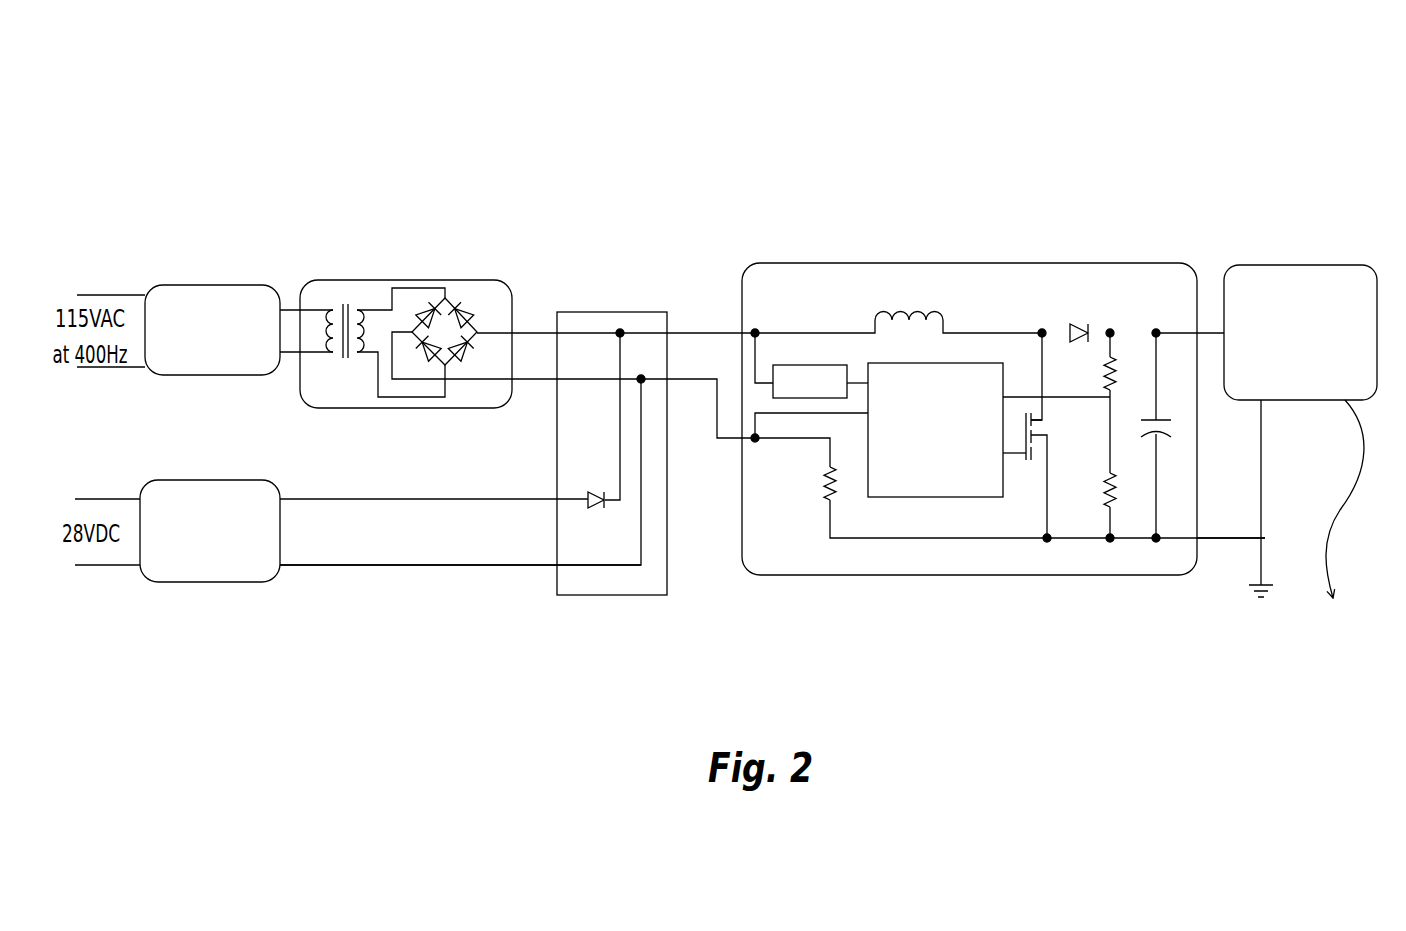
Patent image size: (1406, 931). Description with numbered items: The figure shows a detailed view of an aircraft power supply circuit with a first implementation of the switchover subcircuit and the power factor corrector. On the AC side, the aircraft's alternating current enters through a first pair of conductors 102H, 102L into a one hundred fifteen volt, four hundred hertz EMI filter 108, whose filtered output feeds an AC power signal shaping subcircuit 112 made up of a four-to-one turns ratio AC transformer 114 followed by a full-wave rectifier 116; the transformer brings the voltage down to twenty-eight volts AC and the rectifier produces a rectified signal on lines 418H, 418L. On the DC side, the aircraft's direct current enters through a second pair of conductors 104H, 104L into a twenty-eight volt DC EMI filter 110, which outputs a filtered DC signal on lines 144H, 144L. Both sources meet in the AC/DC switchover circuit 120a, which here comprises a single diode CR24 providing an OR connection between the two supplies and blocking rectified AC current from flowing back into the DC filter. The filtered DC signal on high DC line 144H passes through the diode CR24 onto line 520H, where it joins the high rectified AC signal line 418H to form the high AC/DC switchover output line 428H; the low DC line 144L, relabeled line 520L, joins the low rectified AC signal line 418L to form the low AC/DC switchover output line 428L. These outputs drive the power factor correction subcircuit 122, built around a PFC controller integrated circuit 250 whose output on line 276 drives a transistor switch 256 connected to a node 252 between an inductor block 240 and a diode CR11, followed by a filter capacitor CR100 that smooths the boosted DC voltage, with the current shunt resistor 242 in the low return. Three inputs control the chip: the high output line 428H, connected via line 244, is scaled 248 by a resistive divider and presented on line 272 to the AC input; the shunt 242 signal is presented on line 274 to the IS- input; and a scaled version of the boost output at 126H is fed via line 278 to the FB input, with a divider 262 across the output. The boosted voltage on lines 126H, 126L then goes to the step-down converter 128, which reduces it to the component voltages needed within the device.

The first conductor (high AC conductor) 102H is at (117, 295).
The first conductor (low AC conductor) 102L is at (128, 368).
The 115VAC 400 Hz EMI filter 108 is at (222, 285).
The AC power signal shaping subcircuit 112 is at (380, 280).
The AC transformer 114 is at (342, 303).
The full-wave rectifier 116 is at (472, 311).
The high rectified AC signal line 418H is at (534, 331).
The low rectified AC signal line 418L is at (534, 381).
The AC/DC switchover circuit 120a is at (598, 311).
The high AC/DC switchover output line 428H is at (696, 331).
The low AC/DC switchover output line 428L is at (684, 382).
The line 520H is at (617, 468).
The line 520L is at (641, 478).
The diode CR24 is at (598, 512).
The high DC line 144H is at (318, 498).
The low DC line 144L is at (318, 566).
The second conductor (high DC conductor) 104H is at (118, 497).
The second conductor (low DC conductor) 104L is at (113, 566).
The 28 VDC EMI filter 110 is at (205, 583).
The power factor correction subcircuit 122 is at (1186, 264).
The line 244 is at (765, 382).
The scaling circuit 248 is at (828, 364).
The line 272 is at (866, 397).
The inductor block 240 is at (910, 300).
The PFC controller integrated circuit 250 is at (958, 361).
The line 278 is at (1016, 396).
The node 252 is at (1040, 329).
The diode CR11 is at (1080, 324).
The output capacitor CR100 is at (1165, 412).
The high output line 126H is at (1210, 332).
The step-down converter 128 is at (1317, 265).
The current shunt resistor 242 is at (815, 494).
The line 274 is at (860, 418).
The line 276 is at (1012, 456).
The transistor switch 256 is at (1031, 468).
The output voltage divider 262 is at (1147, 499).
The low output line 126L is at (1220, 540).